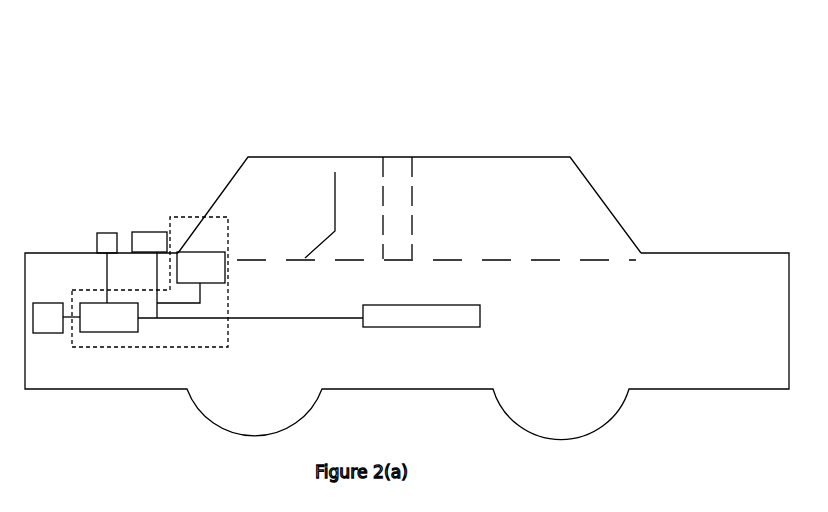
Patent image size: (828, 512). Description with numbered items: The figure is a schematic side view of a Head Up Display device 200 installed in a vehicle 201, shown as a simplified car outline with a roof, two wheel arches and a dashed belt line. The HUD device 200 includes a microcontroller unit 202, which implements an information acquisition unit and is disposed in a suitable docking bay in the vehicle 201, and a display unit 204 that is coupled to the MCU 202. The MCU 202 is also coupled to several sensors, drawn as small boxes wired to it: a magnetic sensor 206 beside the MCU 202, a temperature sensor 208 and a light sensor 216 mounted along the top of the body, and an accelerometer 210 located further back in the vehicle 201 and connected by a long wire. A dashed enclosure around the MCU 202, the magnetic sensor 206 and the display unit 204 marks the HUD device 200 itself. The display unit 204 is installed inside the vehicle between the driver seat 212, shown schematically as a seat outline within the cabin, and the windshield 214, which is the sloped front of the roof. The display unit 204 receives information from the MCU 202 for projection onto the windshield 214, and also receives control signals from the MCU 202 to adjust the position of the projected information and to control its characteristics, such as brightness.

The HUD device 200 is at (193, 353).
The vehicle 201 is at (673, 214).
The microcontroller unit 202 is at (121, 340).
The display unit 204 is at (194, 251).
The magnetic sensor 206 is at (51, 335).
The temperature sensor 208 is at (137, 227).
The accelerometer 210 is at (454, 332).
The driver seat 212 is at (349, 173).
The windshield 214 is at (235, 157).
The light sensor 216 is at (94, 226).